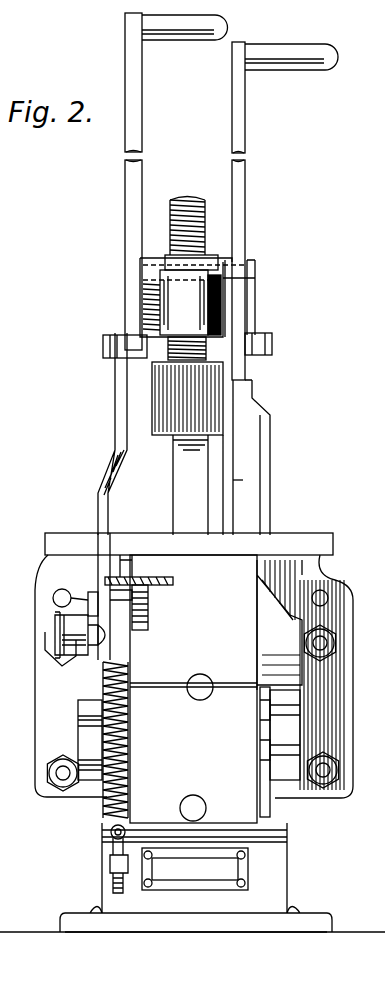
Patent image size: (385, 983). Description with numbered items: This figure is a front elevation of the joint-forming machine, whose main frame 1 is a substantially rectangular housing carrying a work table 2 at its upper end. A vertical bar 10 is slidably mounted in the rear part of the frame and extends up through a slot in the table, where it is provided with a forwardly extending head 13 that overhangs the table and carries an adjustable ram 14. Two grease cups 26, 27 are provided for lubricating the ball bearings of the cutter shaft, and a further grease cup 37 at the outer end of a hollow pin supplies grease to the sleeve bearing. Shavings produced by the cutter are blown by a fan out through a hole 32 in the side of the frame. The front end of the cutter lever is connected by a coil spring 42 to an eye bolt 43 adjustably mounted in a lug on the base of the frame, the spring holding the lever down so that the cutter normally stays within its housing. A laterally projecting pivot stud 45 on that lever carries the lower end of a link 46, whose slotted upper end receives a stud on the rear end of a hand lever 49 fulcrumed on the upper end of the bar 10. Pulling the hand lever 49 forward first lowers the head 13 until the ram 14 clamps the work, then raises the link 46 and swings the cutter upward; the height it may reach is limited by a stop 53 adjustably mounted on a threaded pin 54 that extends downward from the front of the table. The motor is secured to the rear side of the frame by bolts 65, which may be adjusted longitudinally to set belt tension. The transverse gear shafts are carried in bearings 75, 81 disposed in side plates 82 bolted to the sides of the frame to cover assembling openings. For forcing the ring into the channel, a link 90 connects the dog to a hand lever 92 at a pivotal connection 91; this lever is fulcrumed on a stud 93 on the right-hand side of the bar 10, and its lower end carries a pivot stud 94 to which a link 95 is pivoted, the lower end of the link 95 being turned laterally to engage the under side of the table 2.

The main frame 1 is at (193, 689).
The work table 2 is at (295, 548).
The vertical bar 10 is at (181, 506).
The head 13 is at (178, 300).
The ram 14 is at (175, 428).
The grease cup 26 is at (205, 810).
The grease cup 27 is at (205, 680).
The hole 32 is at (279, 625).
The grease cup 37 is at (60, 622).
The coil spring 42 is at (128, 730).
The eye bolt 43 is at (112, 860).
The pivot stud 45 is at (62, 598).
The link 46 is at (115, 445).
The hand lever 49 is at (128, 188).
The stop 53 is at (153, 585).
The threaded pin 54 is at (149, 622).
The bolts 65 is at (323, 643).
The bearings 75 is at (90, 745).
The bearings 81 is at (90, 708).
The side plates 82 is at (270, 815).
The link 90 is at (243, 480).
The pivotal connection 91 is at (215, 275).
The hand lever 92 is at (248, 188).
The stud 93 is at (213, 343).
The pivot stud 94 is at (272, 340).
The link 95 is at (262, 432).